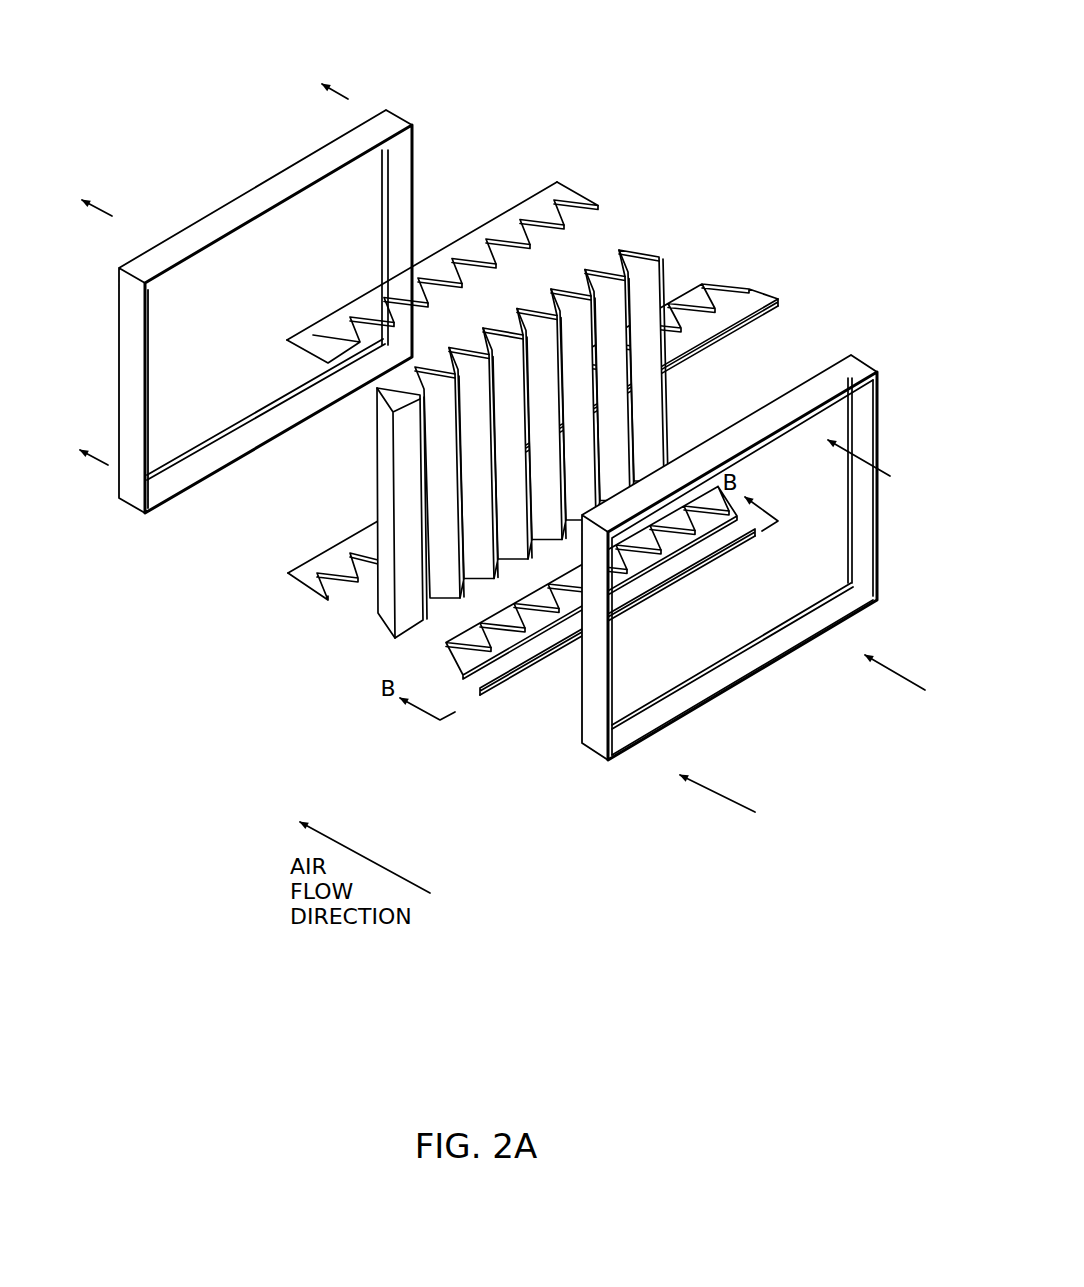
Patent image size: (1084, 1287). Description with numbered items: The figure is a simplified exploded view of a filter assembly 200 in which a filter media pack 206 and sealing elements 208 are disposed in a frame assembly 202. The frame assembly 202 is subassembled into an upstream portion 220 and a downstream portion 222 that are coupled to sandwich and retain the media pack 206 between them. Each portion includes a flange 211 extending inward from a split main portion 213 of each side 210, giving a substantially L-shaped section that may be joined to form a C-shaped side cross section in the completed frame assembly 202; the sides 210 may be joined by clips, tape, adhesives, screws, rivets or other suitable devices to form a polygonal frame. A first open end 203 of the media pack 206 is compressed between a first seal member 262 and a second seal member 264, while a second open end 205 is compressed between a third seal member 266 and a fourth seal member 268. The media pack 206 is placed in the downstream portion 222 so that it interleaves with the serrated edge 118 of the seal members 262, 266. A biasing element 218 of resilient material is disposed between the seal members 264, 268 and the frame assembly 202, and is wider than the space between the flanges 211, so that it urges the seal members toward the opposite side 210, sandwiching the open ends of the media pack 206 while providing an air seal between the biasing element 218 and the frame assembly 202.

The filter assembly 200 is at (600, 108).
The frame assembly 202 is at (868, 354).
The first open end 203 is at (618, 240).
The second open end 205 is at (513, 560).
The filter media pack 206 is at (649, 248).
The sealing elements 208 is at (486, 206).
The side 210 is at (368, 124).
The flange 211 is at (194, 447).
The split main portion 213 is at (176, 483).
The biasing element 218 is at (703, 342).
The upstream portion 220 is at (886, 444).
The downstream portion 222 is at (199, 213).
The first seal member 262 is at (527, 190).
The second seal member 264 is at (740, 292).
The third seal member 266 is at (308, 598).
The fourth seal member 268 is at (462, 678).
The serrated edge 118 is at (592, 212).